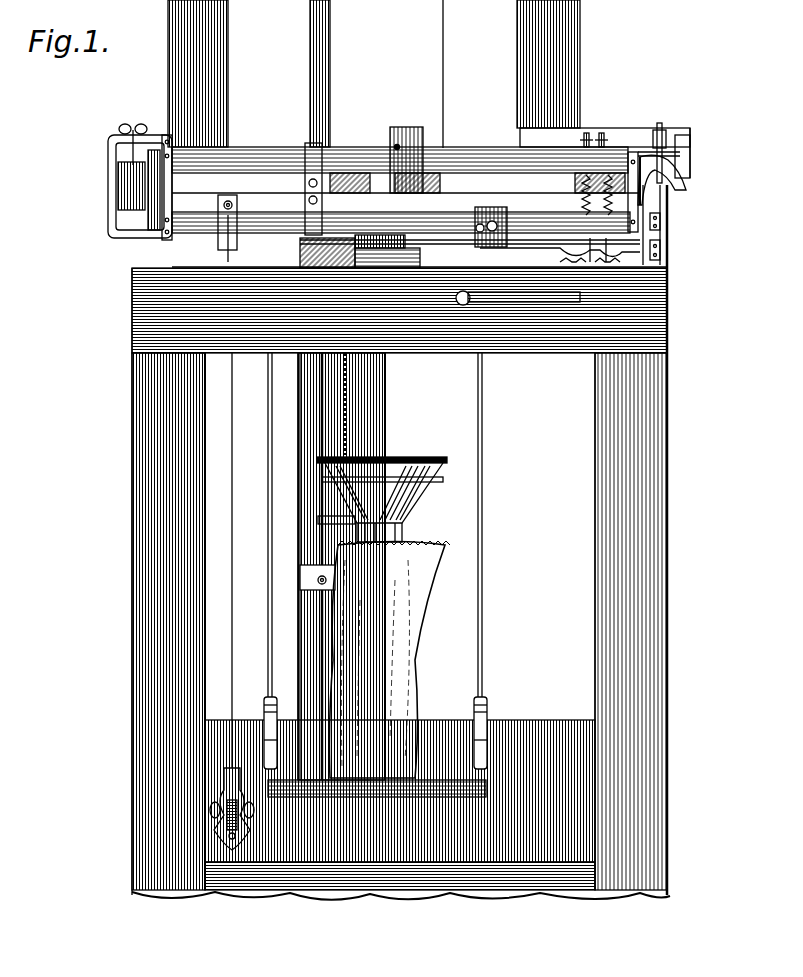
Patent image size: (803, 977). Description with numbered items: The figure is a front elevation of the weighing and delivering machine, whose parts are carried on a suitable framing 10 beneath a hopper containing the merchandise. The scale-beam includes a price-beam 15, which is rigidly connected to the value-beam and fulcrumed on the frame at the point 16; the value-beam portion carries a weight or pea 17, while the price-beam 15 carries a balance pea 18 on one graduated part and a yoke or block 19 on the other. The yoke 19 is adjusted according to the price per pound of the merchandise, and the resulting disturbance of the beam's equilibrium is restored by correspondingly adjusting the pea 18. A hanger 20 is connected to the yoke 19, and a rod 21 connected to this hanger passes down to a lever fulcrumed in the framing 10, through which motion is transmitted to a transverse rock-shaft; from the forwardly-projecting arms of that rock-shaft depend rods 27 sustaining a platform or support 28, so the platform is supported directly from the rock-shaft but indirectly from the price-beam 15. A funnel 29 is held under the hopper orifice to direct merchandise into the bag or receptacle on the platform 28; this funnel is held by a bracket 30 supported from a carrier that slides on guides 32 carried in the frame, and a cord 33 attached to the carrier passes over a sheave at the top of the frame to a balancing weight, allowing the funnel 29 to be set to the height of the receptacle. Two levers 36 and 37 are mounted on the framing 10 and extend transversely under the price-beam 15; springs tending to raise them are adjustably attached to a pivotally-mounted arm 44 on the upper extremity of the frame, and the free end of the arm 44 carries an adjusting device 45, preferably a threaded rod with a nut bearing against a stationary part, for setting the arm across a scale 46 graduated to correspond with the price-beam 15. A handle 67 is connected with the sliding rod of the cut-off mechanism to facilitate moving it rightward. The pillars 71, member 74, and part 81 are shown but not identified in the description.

The framing 10 is at (668, 468).
The supporting columns 71 is at (580, 40).
The cross beam 74 is at (456, 150).
The price-beam 15 is at (442, 228).
The fulcrum point 16 is at (320, 148).
The weight or pea 17 is at (407, 128).
The balance pea 18 is at (508, 212).
The yoke or block 19 is at (240, 240).
The hanger 20 is at (222, 245).
The rod 21 is at (237, 466).
The rods 27 is at (268, 580).
The platform or support 28 is at (425, 792).
The funnel 29 is at (415, 462).
The bracket 30 is at (434, 483).
The guides 32 is at (365, 416).
The cord or flexible connection 33 is at (348, 388).
The lever 36 is at (650, 251).
The lever 37 is at (578, 246).
The pivotally-mounted arm 44 is at (643, 152).
The adjusting device 45 is at (665, 143).
The scale 46 is at (682, 164).
The handle 67 is at (468, 306).
The lever 81 is at (318, 512).